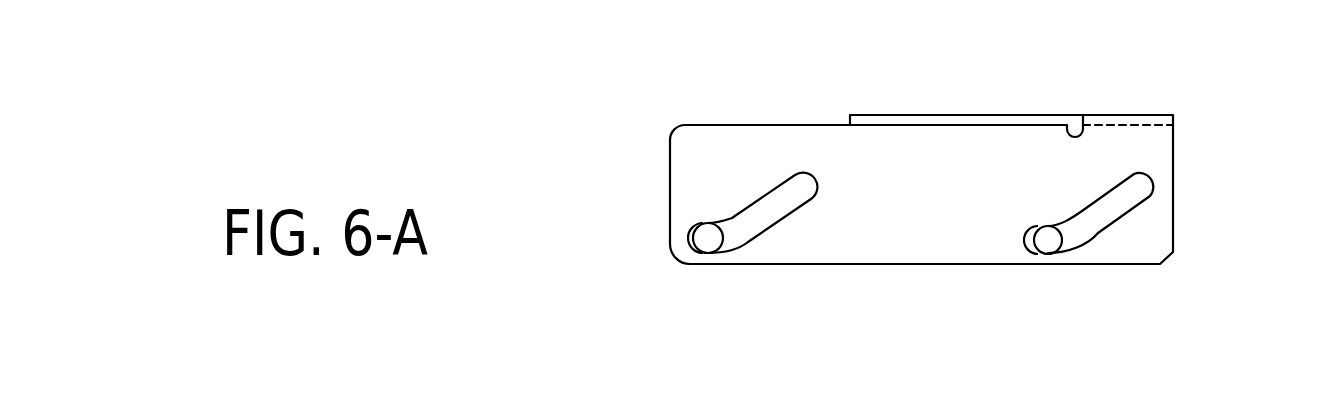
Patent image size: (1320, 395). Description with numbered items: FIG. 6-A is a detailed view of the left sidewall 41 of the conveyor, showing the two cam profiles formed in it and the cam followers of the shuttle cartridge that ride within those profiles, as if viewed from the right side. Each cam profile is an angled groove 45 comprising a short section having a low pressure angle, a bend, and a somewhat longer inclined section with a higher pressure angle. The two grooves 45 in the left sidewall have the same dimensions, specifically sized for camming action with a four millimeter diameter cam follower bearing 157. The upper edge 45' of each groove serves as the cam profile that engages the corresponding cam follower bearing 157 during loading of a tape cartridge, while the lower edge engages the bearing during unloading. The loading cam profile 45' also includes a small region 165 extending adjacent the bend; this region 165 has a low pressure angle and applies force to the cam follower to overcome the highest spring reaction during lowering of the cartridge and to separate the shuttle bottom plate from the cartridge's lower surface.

The left sidewall 41 is at (668, 207).
The cam profile groove 45 is at (985, 153).
The upper edge of groove 45' is at (694, 168).
The cam follower bearing 157 is at (688, 253).
The region of cam profile 165 is at (1048, 228).